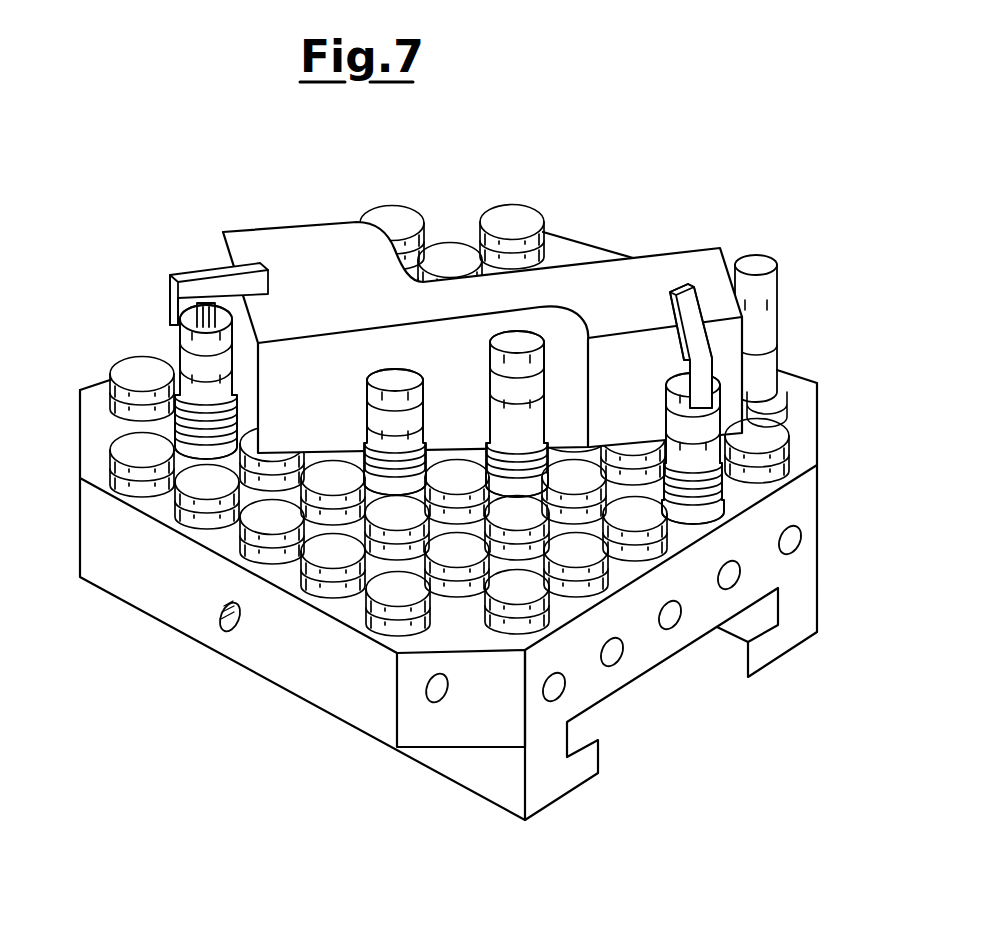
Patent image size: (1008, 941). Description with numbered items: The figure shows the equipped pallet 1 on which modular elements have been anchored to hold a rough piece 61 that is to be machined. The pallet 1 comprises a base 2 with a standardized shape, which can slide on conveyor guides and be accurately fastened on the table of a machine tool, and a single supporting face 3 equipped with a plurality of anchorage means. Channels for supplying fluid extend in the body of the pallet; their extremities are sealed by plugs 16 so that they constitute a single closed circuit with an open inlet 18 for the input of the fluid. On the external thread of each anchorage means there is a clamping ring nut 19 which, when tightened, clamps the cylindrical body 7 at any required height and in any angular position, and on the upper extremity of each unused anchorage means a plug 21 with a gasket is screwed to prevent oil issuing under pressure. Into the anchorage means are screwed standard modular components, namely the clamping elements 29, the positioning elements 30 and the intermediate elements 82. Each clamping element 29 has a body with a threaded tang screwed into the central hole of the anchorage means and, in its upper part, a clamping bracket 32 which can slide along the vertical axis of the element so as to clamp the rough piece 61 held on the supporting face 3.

The pallet 1 is at (827, 381).
The base 2 is at (807, 592).
The supporting face 3 is at (96, 410).
The cylindrical body 7 is at (225, 413).
The plug 16 is at (437, 703).
The open inlet 18 is at (222, 630).
The clamping ring nut 19 is at (543, 247).
The plug 21 is at (500, 210).
The clamping element 29 is at (193, 348).
The positioning element 30 is at (447, 252).
The clamping bracket 32 is at (220, 275).
The rough piece 61 is at (323, 247).
The intermediate element 82 is at (225, 370).